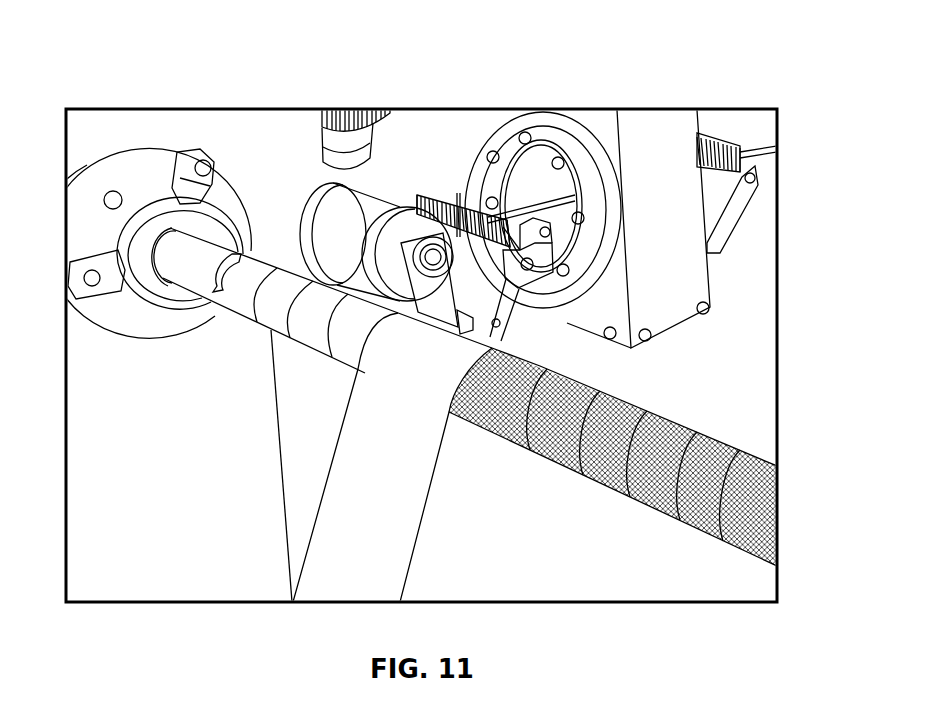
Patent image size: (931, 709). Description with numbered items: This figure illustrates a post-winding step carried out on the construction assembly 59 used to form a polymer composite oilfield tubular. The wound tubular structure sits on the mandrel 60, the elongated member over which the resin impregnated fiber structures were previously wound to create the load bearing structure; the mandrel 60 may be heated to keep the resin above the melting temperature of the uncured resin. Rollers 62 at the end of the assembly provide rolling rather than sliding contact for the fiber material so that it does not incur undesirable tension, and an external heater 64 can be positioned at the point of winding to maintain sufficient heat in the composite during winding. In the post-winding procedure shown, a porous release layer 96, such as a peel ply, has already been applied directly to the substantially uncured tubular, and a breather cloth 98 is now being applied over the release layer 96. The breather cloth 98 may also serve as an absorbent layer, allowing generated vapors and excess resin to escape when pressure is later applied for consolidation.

The construction assembly 59 is at (735, 254).
The mandrel 60 is at (187, 263).
The rollers 62 is at (157, 143).
The external heaters 64 is at (309, 182).
The porous release layer 96 is at (720, 460).
The breather cloth 98 is at (393, 523).